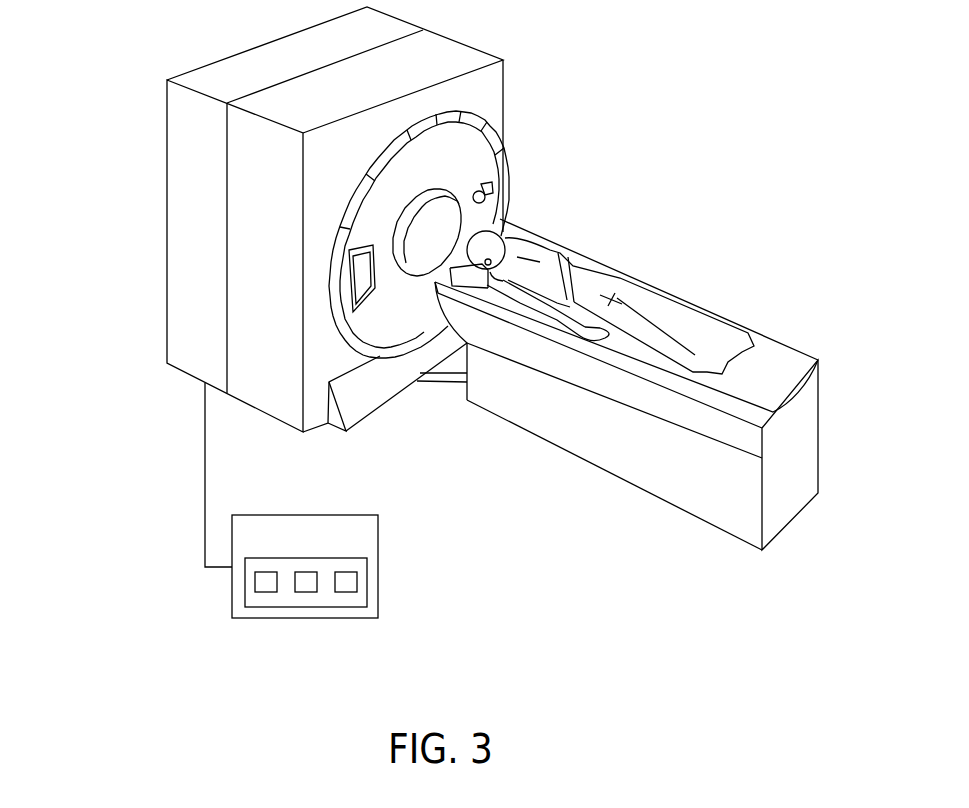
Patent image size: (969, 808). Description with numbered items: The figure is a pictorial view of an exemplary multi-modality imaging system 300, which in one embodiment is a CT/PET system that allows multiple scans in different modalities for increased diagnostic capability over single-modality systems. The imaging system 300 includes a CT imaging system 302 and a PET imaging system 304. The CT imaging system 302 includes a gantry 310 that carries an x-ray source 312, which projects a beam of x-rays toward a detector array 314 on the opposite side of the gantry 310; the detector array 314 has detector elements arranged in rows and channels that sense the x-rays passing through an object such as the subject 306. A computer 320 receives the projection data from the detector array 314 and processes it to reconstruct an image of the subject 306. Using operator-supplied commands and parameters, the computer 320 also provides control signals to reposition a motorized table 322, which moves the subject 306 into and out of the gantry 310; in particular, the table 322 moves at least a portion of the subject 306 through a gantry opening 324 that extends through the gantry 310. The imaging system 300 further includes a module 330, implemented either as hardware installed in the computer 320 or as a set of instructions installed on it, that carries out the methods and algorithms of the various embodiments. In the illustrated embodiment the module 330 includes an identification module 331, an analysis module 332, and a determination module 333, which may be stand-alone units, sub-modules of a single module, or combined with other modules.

The multi-modality imaging system 300 is at (146, 49).
The CT imaging system 302 is at (293, 420).
The PET imaging system 304 is at (190, 367).
The subject 306 is at (568, 265).
The gantry 310 is at (500, 88).
The x-ray source 312 is at (494, 186).
The detector array 314 is at (363, 290).
The computer 320 is at (378, 532).
The motorized table 322 is at (587, 447).
The gantry opening 324 is at (428, 230).
The module 330 is at (370, 588).
The identification module 331 is at (263, 593).
The analysis module 332 is at (303, 595).
The determination module 333 is at (343, 595).